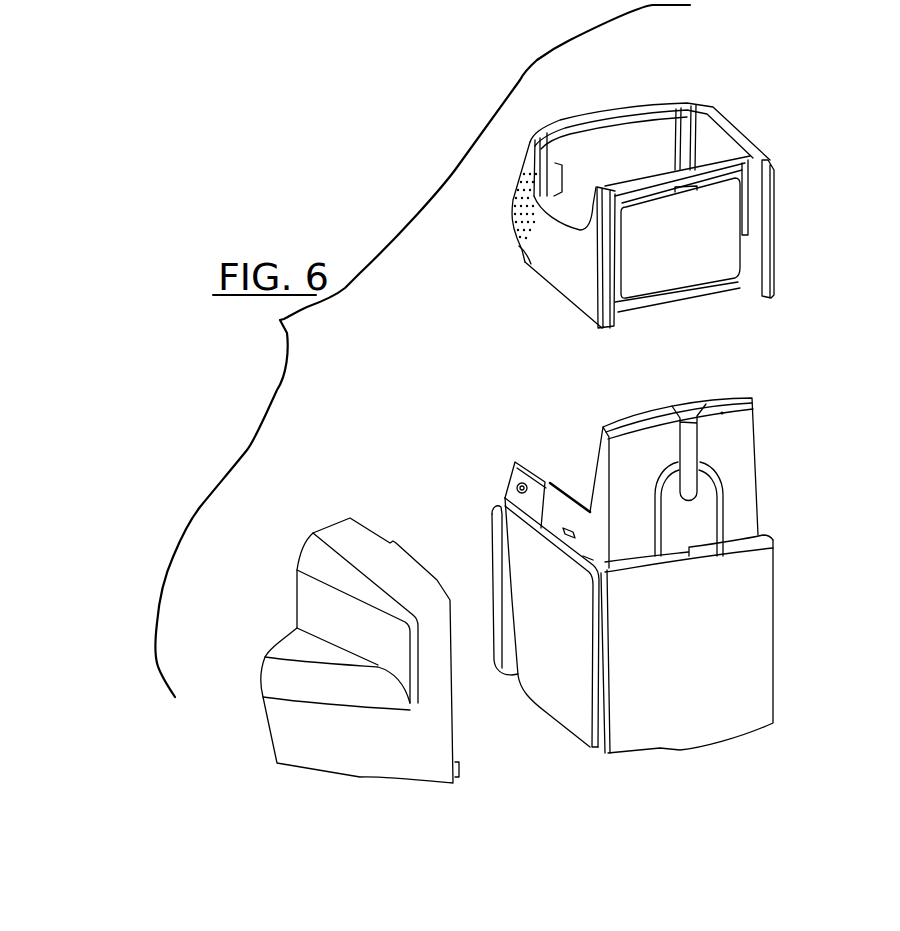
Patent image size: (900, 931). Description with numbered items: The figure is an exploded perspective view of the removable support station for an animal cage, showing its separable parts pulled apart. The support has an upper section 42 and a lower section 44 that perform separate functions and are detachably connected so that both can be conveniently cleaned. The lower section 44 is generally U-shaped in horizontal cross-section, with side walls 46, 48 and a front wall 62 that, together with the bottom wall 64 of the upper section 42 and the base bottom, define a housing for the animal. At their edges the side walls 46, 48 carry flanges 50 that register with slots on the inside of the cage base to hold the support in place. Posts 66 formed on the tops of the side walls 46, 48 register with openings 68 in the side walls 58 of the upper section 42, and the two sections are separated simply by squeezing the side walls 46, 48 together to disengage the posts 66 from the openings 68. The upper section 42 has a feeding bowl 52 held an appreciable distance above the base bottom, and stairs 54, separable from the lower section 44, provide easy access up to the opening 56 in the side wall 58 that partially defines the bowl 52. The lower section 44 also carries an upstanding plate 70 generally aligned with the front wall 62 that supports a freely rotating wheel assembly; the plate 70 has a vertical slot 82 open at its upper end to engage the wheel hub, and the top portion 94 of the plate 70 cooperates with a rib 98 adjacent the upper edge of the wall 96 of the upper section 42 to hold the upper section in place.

The upper section 42 is at (778, 135).
The lower section 44 is at (797, 607).
The side wall 46 is at (565, 688).
The side wall 48 is at (766, 571).
The flanges 50 is at (500, 528).
The feeding bowl 52 is at (656, 131).
The stairs 54 is at (349, 507).
The opening 56 is at (526, 228).
The side wall 58 is at (782, 247).
The front wall 62 is at (752, 685).
The bottom wall 64 is at (686, 293).
The posts 66 is at (519, 486).
The openings 68 is at (523, 242).
The upstanding plate 70 is at (750, 477).
The vertical slot 82 is at (692, 455).
The top portion 94 is at (720, 400).
The wall 96 is at (710, 260).
The rib 98 is at (722, 183).